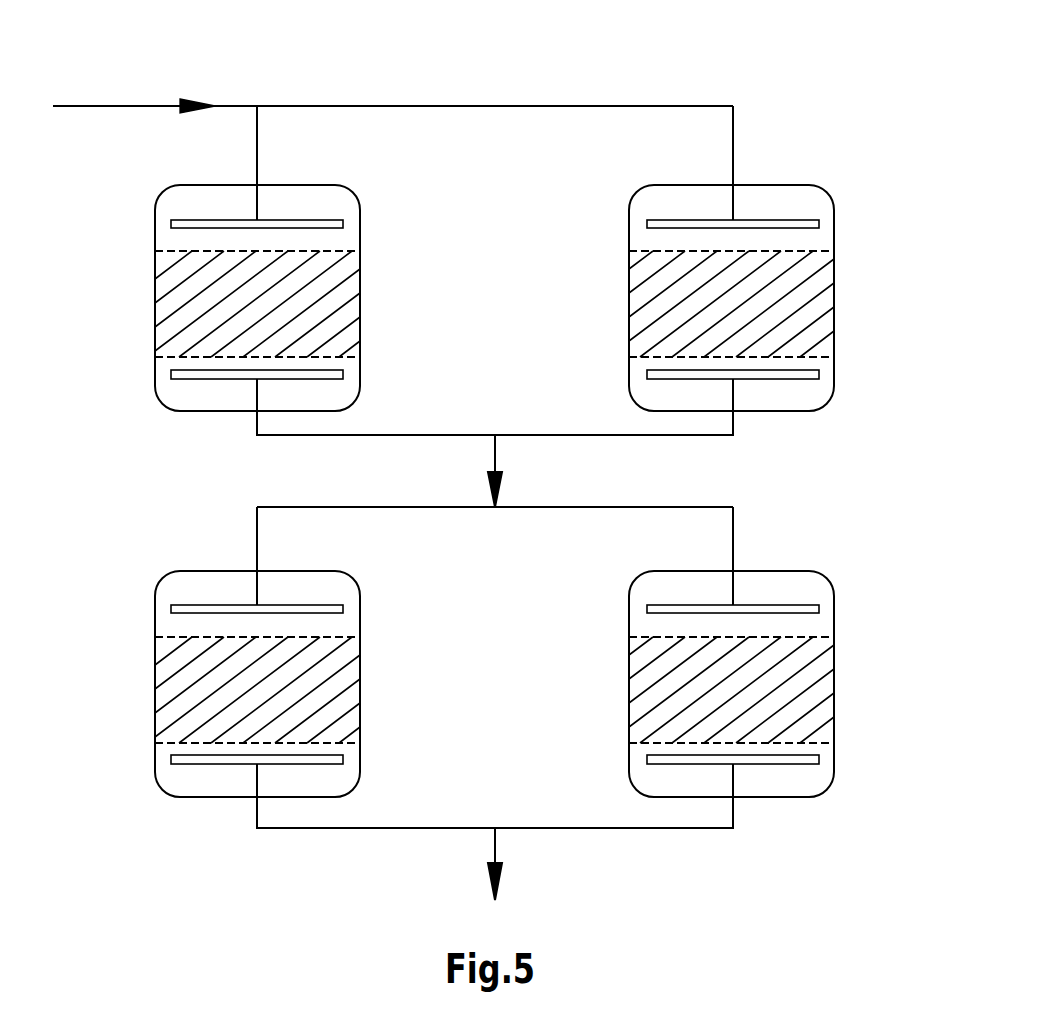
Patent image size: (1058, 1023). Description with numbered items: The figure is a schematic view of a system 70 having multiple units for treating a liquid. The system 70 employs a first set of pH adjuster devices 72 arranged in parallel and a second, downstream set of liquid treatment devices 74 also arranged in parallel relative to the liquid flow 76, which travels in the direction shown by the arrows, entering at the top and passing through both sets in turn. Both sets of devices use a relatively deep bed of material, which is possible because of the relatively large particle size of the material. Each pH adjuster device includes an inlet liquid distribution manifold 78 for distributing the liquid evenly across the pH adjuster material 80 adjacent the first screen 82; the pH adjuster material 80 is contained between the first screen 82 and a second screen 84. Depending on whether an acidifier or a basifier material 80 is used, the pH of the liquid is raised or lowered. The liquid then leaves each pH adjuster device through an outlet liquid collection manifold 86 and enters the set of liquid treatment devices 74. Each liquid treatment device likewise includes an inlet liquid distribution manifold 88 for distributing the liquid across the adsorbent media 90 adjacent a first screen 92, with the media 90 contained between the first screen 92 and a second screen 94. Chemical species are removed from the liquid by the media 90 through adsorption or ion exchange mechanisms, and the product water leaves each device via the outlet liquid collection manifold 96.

The system 70 is at (415, 41).
The pH adjuster devices 72 is at (550, 303).
The liquid treatment devices 74 is at (550, 690).
The liquid flow 76 is at (98, 105).
The inlet liquid distribution manifold 78 is at (347, 222).
The pH adjuster material 80 is at (366, 296).
The first screen 82 is at (366, 251).
The second screen 84 is at (366, 356).
The outlet liquid collection manifold 86 is at (266, 382).
The inlet liquid distribution manifold 88 is at (347, 608).
The adsorbent media 90 is at (366, 682).
The first screen 92 is at (366, 637).
The second screen 94 is at (366, 742).
The outlet liquid collection manifold 96 is at (266, 768).